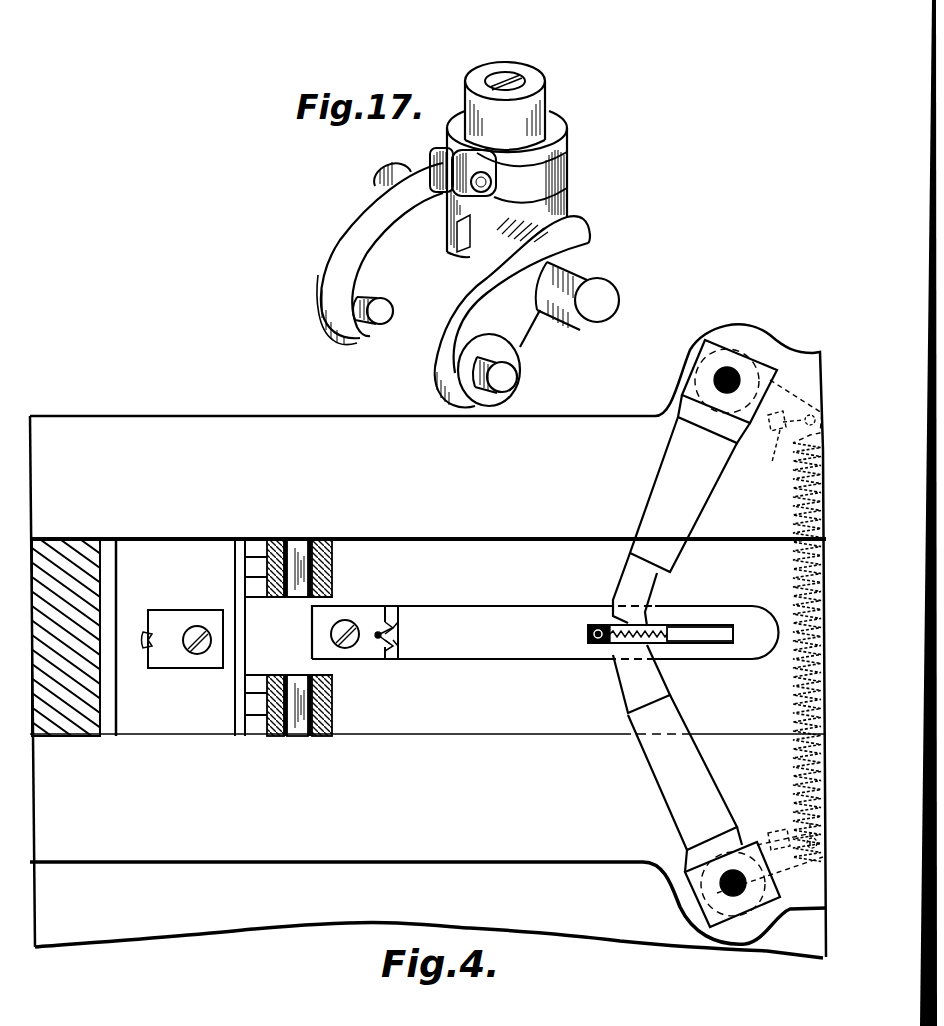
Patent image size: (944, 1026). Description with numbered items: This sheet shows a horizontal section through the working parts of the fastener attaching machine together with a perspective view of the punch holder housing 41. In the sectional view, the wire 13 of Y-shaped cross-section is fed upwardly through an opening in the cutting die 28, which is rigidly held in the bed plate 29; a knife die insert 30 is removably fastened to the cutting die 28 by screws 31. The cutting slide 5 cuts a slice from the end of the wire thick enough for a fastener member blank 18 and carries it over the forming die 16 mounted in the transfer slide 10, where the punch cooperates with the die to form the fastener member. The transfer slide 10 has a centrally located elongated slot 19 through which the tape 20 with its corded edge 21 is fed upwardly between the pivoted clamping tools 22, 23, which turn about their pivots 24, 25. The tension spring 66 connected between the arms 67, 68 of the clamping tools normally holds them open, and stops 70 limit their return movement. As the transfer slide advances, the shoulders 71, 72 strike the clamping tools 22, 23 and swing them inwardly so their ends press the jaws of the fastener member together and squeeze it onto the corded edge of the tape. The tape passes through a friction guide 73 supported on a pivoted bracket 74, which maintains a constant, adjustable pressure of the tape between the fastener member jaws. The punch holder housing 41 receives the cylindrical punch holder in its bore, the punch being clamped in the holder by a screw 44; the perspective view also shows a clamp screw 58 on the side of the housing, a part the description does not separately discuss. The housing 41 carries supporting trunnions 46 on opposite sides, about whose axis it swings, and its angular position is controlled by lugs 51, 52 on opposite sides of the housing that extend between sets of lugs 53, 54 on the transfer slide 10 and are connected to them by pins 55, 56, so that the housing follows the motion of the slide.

In FIG. 4, the cutting slide 5 is at (83, 720).
In FIG. 4, the transfer slide 10 is at (512, 728).
In FIG. 4, the wire 13 is at (145, 648).
In FIG. 4, the forming die 16 is at (360, 614).
In FIG. 4, the fastener member blank 18 is at (380, 647).
In FIG. 4, the elongated slot 19 is at (470, 650).
In FIG. 4, the tape 20 is at (662, 622).
In FIG. 4, the corded edge 21 is at (602, 625).
In FIG. 4, the clamping tool 22 is at (657, 484).
In FIG. 4, the clamping tool 23 is at (663, 776).
In FIG. 4, the pivot 24 is at (727, 368).
In FIG. 4, the pivot 25 is at (718, 888).
In FIG. 4, the cutting die 28 is at (178, 728).
In FIG. 4, the bed plate 29 is at (150, 848).
In FIG. 4, the knife die insert 30 is at (172, 622).
In FIG. 4, the screws 31 is at (198, 626).
In FIG. 17, the punch holder housing 41 is at (566, 160).
In FIG. 17, the screw 44 is at (498, 73).
In FIG. 17, the supporting trunnions 46 is at (392, 166).
In FIG. 17, the lug 51 is at (357, 228).
In FIG. 4, the lug 51 is at (261, 573).
In FIG. 17, the lug 52 is at (463, 293).
In FIG. 4, the lug 52 is at (265, 700).
In FIG. 4, the lugs 53 is at (335, 570).
In FIG. 4, the lugs 54 is at (338, 700).
In FIG. 17, the pin 55 is at (377, 318).
In FIG. 4, the pin 55 is at (298, 552).
In FIG. 17, the pin 56 is at (510, 381).
In FIG. 4, the pin 56 is at (300, 705).
In FIG. 17, the clamp screw 58 is at (492, 186).
In FIG. 4, the tension spring 66 is at (793, 549).
In FIG. 4, the arm 67 is at (790, 431).
In FIG. 4, the arm 68 is at (797, 833).
In FIG. 4, the stops 70 is at (765, 430).
In FIG. 4, the shoulder 71 is at (400, 650).
In FIG. 4, the shoulder 72 is at (398, 618).
In FIG. 4, the friction guide 73 is at (590, 642).
In FIG. 4, the bracket 74 is at (712, 642).